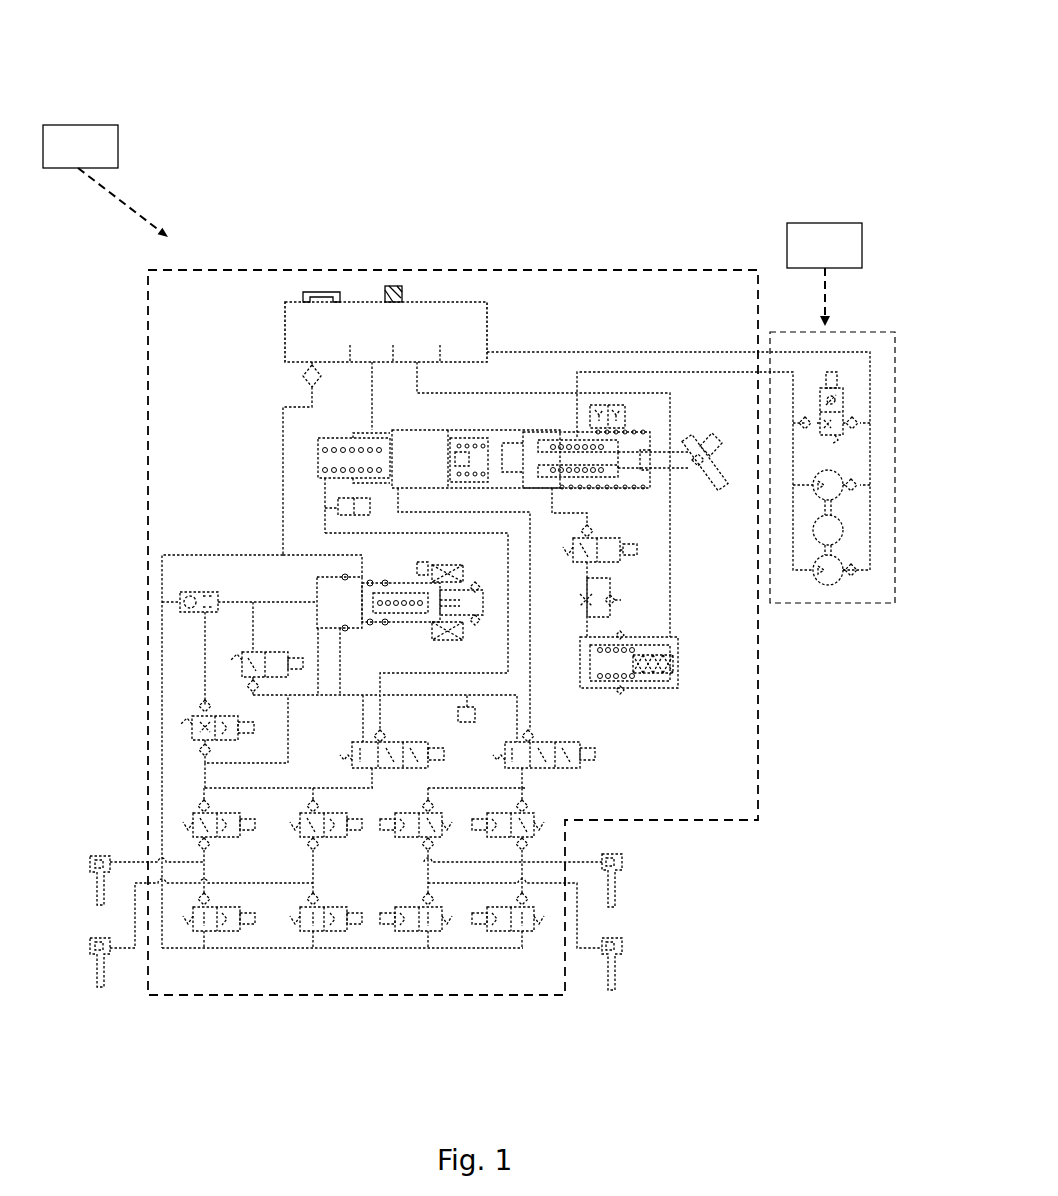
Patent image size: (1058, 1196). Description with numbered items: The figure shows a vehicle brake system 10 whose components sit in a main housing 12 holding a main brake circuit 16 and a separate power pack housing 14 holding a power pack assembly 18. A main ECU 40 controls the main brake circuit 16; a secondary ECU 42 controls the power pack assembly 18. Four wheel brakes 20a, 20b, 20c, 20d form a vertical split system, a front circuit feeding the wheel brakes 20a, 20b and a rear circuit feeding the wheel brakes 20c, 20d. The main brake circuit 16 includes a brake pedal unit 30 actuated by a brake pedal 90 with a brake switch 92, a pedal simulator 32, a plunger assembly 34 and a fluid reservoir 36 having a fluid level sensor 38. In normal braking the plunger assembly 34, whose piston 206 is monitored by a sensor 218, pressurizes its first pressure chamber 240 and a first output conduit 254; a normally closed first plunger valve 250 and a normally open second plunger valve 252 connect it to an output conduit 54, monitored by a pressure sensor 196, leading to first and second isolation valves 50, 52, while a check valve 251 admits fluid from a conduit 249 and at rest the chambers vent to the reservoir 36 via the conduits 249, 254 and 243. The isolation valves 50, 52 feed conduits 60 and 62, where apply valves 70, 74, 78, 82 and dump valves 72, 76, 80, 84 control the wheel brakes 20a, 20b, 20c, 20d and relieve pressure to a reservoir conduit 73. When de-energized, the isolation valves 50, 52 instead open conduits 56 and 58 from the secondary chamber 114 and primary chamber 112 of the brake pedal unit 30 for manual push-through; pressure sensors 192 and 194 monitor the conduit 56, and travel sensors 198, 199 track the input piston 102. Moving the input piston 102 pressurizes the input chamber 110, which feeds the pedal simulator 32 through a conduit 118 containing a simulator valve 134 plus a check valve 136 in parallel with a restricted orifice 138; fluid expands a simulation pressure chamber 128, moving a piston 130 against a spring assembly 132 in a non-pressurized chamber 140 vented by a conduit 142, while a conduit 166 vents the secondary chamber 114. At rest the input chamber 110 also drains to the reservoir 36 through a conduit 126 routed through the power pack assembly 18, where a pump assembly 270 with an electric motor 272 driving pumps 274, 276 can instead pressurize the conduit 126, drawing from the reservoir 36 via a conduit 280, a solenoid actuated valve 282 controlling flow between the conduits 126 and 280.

The brake system 10 is at (683, 80).
The main housing 12 is at (328, 268).
The power pack housing 14 is at (877, 330).
The main brake circuit 16 is at (507, 235).
The power pack assembly 18 is at (852, 354).
The wheel brake 20a is at (95, 852).
The wheel brake 20b is at (108, 953).
The wheel brake 20c is at (622, 947).
The wheel brake 20d is at (620, 860).
The brake pedal unit 30 is at (512, 399).
The pedal simulator 32 is at (665, 704).
The plunger assembly 34 is at (329, 554).
The fluid reservoir 36 is at (302, 303).
The fluid level sensor 38 is at (393, 286).
The main electronic control unit 40 is at (88, 123).
The secondary electronic control unit 42 is at (823, 222).
The first isolation valve 50 is at (407, 742).
The second isolation valve 52 is at (580, 765).
The output conduit 54 is at (353, 693).
The conduit 56 is at (507, 620).
The conduit 58 is at (532, 713).
The conduit 60 is at (332, 787).
The conduit 62 is at (520, 778).
The first apply valve 70 is at (192, 815).
The first dump valve 72 is at (233, 930).
The reservoir conduit 73 is at (187, 950).
The second apply valve 74 is at (302, 830).
The second dump valve 76 is at (347, 930).
The third apply valve 78 is at (398, 837).
The third dump valve 80 is at (440, 930).
The fourth apply valve 82 is at (498, 833).
The fourth dump valve 84 is at (530, 930).
The brake pedal 90 is at (723, 477).
The brake switch 92 is at (703, 432).
The input piston 102 is at (618, 447).
The input chamber 110 is at (542, 443).
The primary chamber 112 is at (407, 437).
The secondary chamber 114 is at (333, 458).
The conduit 118 is at (550, 500).
The conduit 126 is at (683, 368).
The simulation pressure chamber 128 is at (580, 655).
The piston 130 is at (588, 677).
The spring assembly 132 is at (678, 687).
The simulator valve 134 is at (623, 560).
The check valve 136 is at (582, 597).
The restricted orifice 138 is at (615, 598).
The non-pressurized chamber 140 is at (660, 643).
The conduit 142 is at (668, 550).
The conduit 166 is at (373, 380).
The pressure sensor 192 is at (337, 500).
The redundant pressure sensor 194 is at (362, 500).
The pressure sensor 196 is at (470, 705).
The first travel sensor 198 is at (598, 408).
The second travel sensor 199 is at (618, 410).
The piston 206 is at (330, 602).
The sensor 218 is at (428, 557).
The first pressure chamber 240 is at (288, 597).
The conduit 243 is at (338, 642).
The conduit 249 is at (283, 537).
The first plunger valve 250 is at (242, 653).
The check valve 251 is at (185, 597).
The second plunger valve 252 is at (192, 720).
The first output conduit 254 is at (267, 602).
The pump assembly 270 is at (873, 500).
The electric motor 272 is at (843, 527).
The first pump 274 is at (835, 467).
The second pump 276 is at (830, 587).
The conduit 280 is at (872, 365).
The valve 282 is at (842, 403).